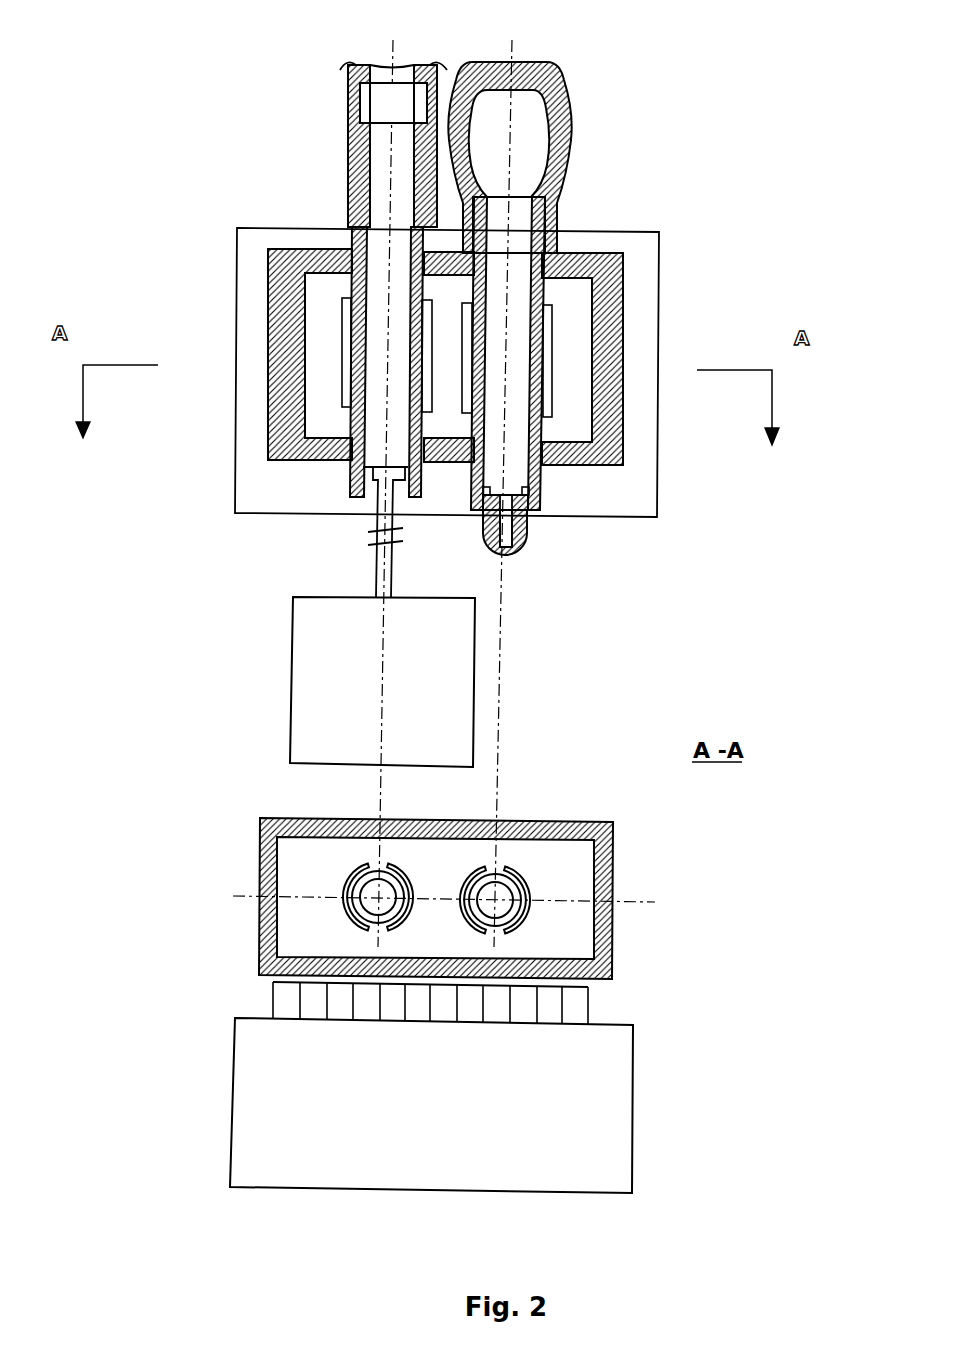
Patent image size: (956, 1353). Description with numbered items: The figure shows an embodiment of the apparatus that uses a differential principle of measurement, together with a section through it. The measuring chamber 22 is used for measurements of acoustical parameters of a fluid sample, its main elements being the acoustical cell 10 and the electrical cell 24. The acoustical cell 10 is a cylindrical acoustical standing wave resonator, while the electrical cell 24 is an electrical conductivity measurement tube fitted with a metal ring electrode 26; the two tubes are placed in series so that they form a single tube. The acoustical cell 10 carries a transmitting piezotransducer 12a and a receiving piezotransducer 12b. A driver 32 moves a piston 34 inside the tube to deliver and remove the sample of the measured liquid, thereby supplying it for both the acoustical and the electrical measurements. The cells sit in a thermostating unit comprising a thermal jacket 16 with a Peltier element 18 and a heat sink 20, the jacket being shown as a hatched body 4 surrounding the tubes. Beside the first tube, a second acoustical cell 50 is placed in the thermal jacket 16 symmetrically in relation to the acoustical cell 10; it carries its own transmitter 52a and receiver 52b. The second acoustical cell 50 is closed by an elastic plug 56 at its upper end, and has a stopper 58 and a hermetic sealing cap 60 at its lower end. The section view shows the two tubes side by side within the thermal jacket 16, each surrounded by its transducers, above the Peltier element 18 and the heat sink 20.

The housing 4 is at (288, 260).
The acoustical cell 10 is at (347, 907).
The transmitting piezotransducer 12a is at (345, 372).
The receiving piezotransducer 12b is at (412, 388).
The thermal jacket 16 is at (483, 822).
The Peltier element 18 is at (282, 998).
The heat sink 20 is at (260, 1122).
The measuring chamber 22 is at (343, 220).
The electrical cell 24 is at (348, 178).
The metal ring electrode 26 is at (350, 83).
The driver 32 is at (305, 733).
The piston 34 is at (372, 472).
The second acoustical cell 50 is at (560, 463).
The transmitter 52a is at (553, 397).
The receiver 52b is at (470, 372).
The elastic plug 56 is at (570, 152).
The stopper 58 is at (515, 477).
The hermetic sealing cap 60 is at (513, 558).